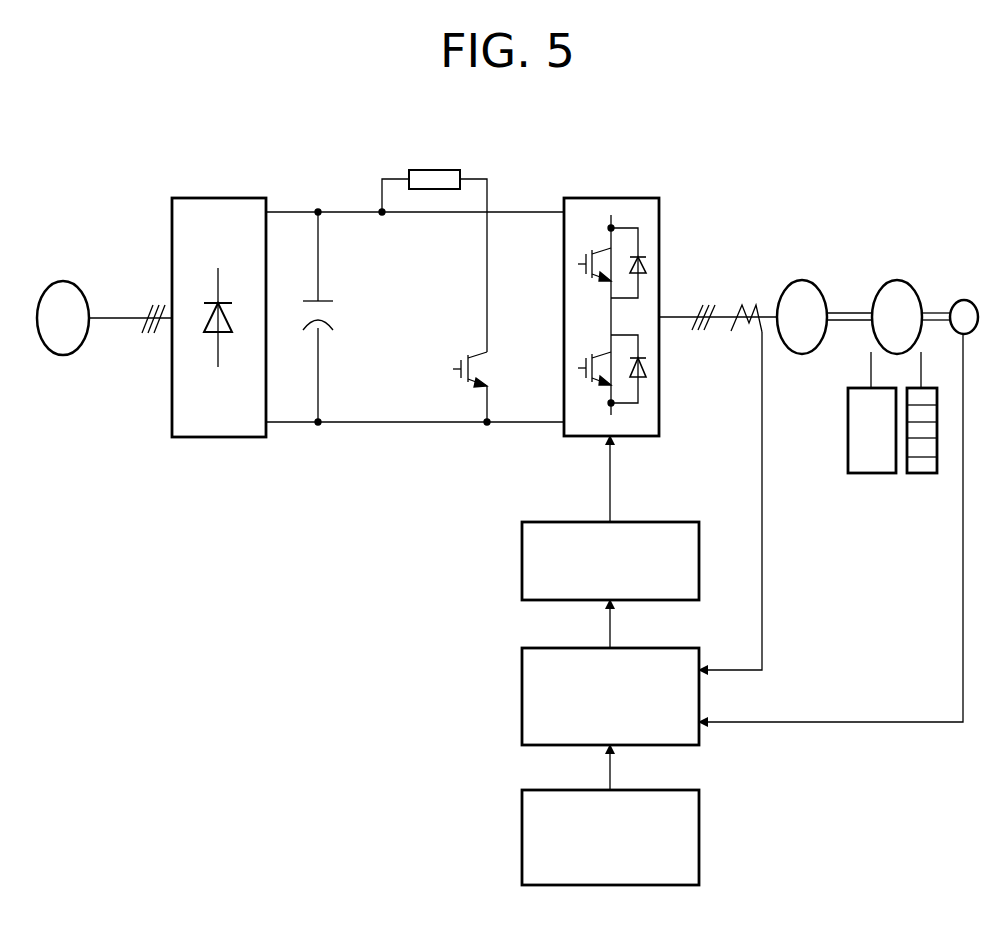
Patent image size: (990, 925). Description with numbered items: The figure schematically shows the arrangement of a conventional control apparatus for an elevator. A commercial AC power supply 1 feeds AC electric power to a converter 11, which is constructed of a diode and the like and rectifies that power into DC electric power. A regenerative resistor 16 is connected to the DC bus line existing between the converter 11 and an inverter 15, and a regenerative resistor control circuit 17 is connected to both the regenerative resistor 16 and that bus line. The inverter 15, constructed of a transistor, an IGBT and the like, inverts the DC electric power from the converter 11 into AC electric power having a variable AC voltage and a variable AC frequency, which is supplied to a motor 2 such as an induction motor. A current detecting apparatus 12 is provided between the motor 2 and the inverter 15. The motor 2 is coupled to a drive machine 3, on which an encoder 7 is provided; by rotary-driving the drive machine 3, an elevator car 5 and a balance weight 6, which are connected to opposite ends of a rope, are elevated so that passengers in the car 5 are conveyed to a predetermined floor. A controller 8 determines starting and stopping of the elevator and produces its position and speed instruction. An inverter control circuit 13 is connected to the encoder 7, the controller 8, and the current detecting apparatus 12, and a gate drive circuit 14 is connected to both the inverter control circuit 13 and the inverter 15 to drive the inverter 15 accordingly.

The commercial AC power supply 1 is at (63, 281).
The converter 11 is at (172, 410).
The regenerative resistor 16 is at (437, 170).
The regenerative resistor control circuit 17 is at (474, 351).
The inverter 15 is at (620, 198).
The current detecting apparatus 12 is at (745, 277).
The motor 2 is at (798, 280).
The drive machine 3 is at (896, 280).
The encoder 7 is at (964, 300).
The car 5 is at (848, 428).
The balance weight 6 is at (920, 473).
The gate drive circuit 14 is at (669, 522).
The inverter control circuit 13 is at (690, 648).
The controller 8 is at (699, 820).